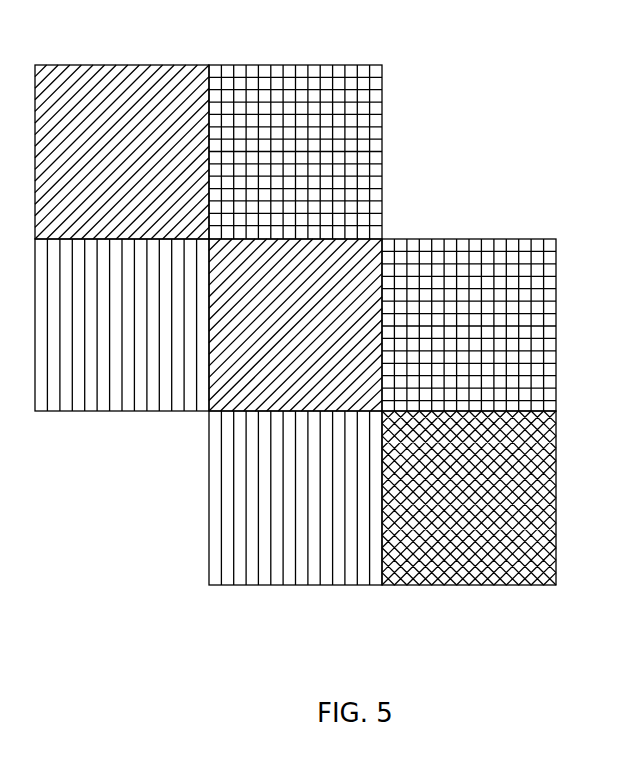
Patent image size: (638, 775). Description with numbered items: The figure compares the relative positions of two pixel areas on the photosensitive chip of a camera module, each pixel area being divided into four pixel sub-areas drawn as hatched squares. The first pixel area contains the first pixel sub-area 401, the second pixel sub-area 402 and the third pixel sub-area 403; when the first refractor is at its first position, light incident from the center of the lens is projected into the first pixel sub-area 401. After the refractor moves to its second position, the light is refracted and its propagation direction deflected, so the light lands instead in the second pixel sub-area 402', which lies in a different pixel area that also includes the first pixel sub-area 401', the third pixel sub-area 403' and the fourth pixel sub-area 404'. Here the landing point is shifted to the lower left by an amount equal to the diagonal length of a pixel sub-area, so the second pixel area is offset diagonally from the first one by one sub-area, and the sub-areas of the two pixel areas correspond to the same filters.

The first pixel sub-area 401 is at (122, 128).
The second pixel sub-area 402 is at (298, 128).
The third pixel sub-area 403 is at (122, 356).
The first pixel sub-area 401' is at (342, 272).
The second pixel sub-area 402' is at (469, 301).
The third pixel sub-area 403' is at (295, 529).
The fourth pixel sub-area 404' is at (469, 531).